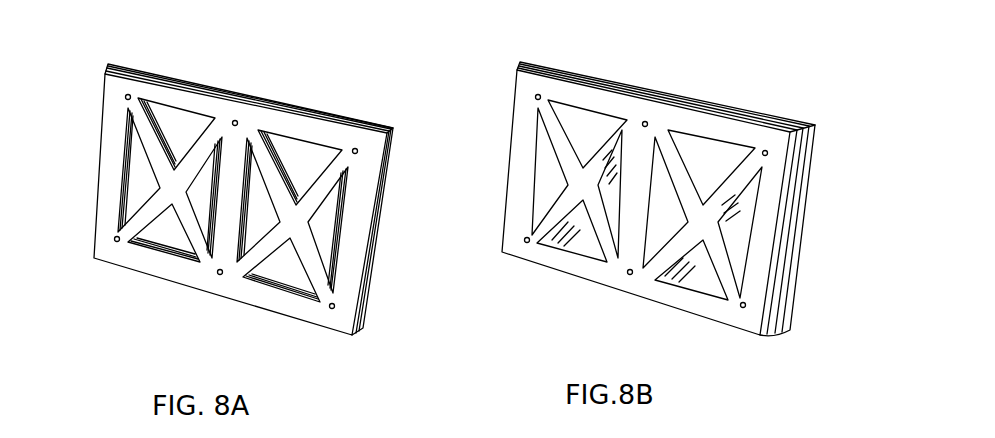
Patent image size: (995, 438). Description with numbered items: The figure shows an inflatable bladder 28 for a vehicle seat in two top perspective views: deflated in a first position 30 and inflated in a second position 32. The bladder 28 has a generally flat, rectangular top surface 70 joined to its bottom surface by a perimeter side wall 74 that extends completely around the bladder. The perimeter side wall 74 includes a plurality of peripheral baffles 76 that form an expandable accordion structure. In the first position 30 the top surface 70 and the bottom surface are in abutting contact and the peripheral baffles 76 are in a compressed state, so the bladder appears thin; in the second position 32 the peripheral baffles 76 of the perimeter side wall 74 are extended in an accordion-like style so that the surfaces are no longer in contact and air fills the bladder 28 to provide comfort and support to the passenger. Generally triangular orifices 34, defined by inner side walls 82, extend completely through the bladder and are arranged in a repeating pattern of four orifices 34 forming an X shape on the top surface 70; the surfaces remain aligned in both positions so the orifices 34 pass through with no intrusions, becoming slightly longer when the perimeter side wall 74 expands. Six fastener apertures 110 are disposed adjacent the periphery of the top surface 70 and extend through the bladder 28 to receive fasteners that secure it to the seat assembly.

In FIG. 8A, the inflatable bladder 28 is at (80, 140).
In FIG. 8B, the inflatable bladder 28 is at (818, 207).
In FIG. 8A, the first position 30 is at (82, 91).
In FIG. 8B, the second position 32 is at (825, 168).
In FIG. 8A, the orifice 34 is at (138, 148).
In FIG. 8B, the orifice 34 is at (595, 127).
In FIG. 8A, the top surface 70 is at (355, 238).
In FIG. 8B, the top surface 70 is at (520, 127).
In FIG. 8A, the perimeter side wall 74 is at (260, 101).
In FIG. 8B, the perimeter side wall 74 is at (560, 64).
In FIG. 8A, the peripheral baffles 76 is at (367, 296).
In FIG. 8B, the peripheral baffles 76 is at (780, 292).
In FIG. 8A, the inner side walls 82 is at (165, 172).
In FIG. 8B, the inner side walls 82 is at (542, 165).
In FIG. 8A, the fastener aperture 110 is at (125, 95).
In FIG. 8B, the fastener aperture 110 is at (535, 95).